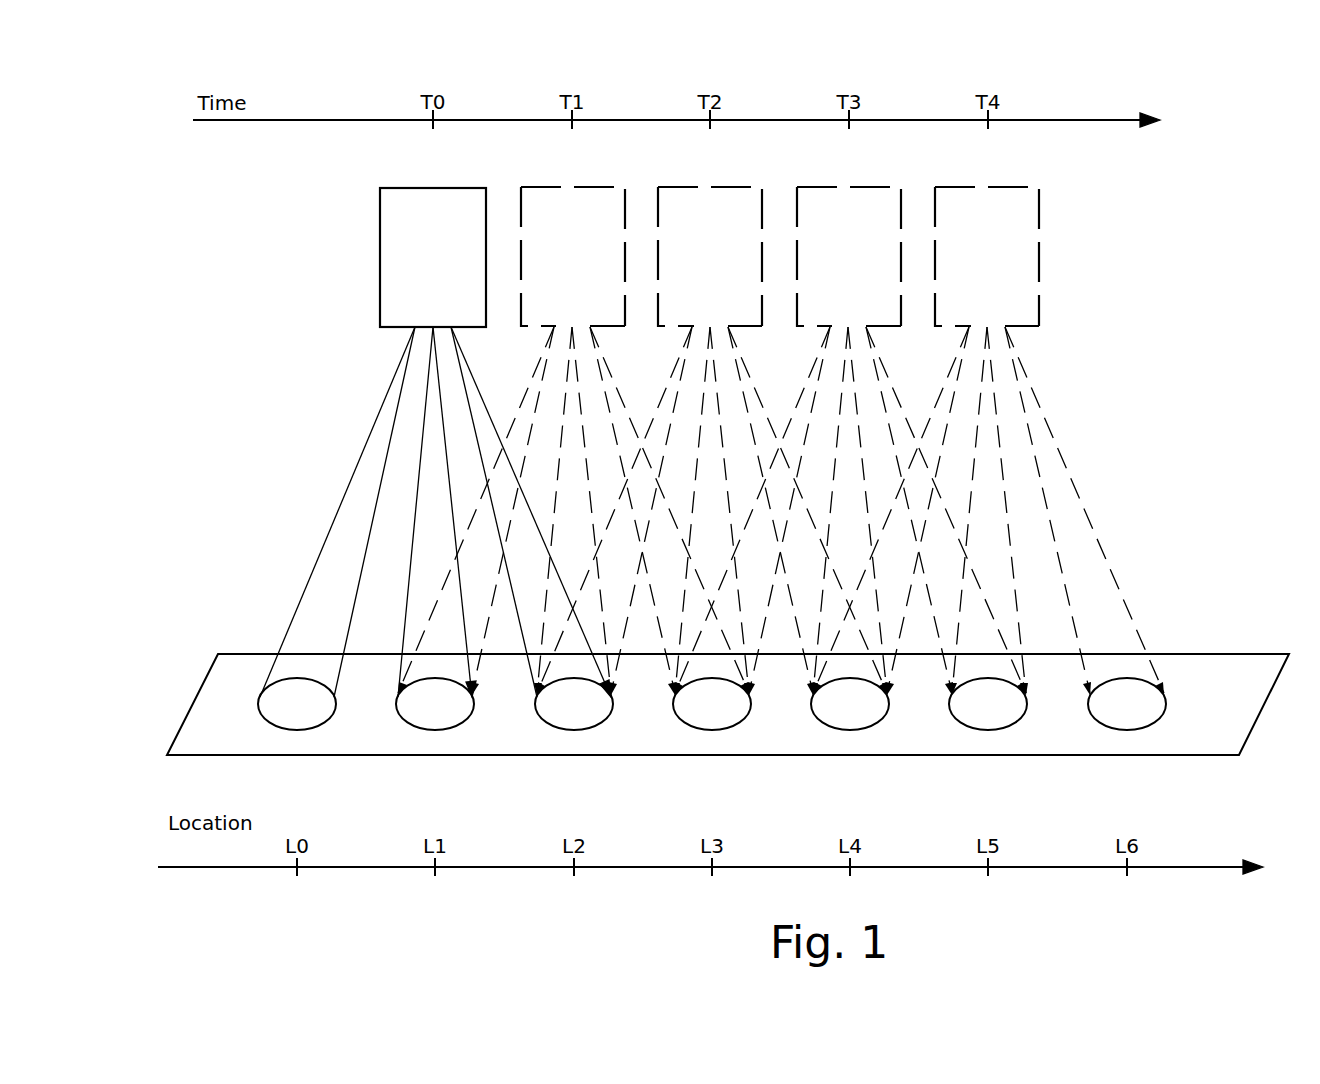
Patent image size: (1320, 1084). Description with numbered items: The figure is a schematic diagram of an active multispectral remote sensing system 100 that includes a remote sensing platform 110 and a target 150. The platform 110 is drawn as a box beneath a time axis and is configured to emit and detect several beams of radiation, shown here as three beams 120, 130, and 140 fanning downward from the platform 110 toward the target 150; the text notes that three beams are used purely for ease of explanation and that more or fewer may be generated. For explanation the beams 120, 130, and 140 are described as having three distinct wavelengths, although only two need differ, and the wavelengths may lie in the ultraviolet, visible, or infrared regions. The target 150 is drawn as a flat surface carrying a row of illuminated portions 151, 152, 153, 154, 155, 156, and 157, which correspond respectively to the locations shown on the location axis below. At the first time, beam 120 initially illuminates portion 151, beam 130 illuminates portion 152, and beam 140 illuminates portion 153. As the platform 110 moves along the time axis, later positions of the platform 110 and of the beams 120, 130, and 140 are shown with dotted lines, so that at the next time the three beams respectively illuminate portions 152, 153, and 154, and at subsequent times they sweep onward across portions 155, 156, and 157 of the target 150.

The active multispectral remote sensing system 100 is at (1252, 344).
The remote sensing platform 110 is at (400, 223).
The beam of radiation 120 is at (348, 548).
The beam of radiation 130 is at (435, 460).
The beam of radiation 140 is at (470, 377).
The target 150 is at (1220, 668).
The portion of the target 151 is at (297, 729).
The portion of the target 152 is at (435, 729).
The portion of the target 153 is at (574, 729).
The portion of the target 154 is at (712, 729).
The portion of the target 155 is at (850, 729).
The portion of the target 156 is at (988, 729).
The portion of the target 157 is at (1127, 729).